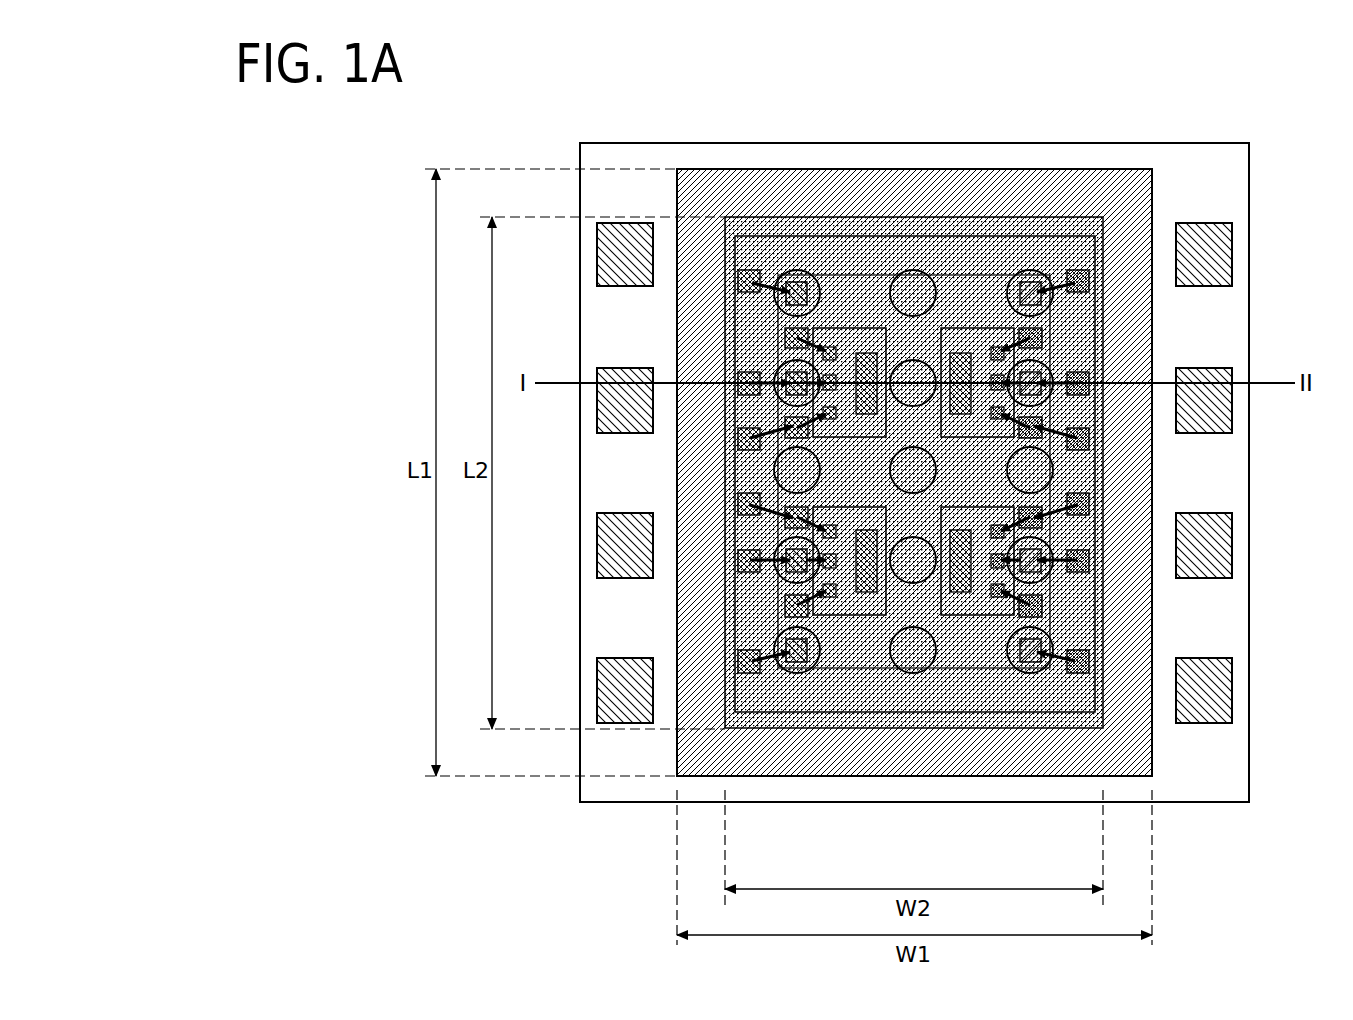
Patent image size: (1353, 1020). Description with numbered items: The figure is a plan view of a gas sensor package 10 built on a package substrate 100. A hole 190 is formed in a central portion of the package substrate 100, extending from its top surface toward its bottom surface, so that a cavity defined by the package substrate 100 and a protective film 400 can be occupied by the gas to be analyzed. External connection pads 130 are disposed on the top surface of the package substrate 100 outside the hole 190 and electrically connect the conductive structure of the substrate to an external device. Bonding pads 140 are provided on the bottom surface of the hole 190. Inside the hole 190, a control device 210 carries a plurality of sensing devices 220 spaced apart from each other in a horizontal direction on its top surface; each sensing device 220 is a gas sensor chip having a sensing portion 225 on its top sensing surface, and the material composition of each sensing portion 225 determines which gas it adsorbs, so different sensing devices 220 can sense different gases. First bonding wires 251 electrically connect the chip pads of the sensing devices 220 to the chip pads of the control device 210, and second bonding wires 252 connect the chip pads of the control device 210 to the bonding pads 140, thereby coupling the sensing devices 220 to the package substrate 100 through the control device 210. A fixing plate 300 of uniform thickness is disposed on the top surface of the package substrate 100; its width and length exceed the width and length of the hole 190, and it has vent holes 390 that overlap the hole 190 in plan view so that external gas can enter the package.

The gas sensor package 10 is at (1202, 80).
The package substrate 100 is at (1249, 180).
The external connection pad 130 is at (1215, 253).
The bonding pads 140 is at (1085, 290).
The hole 190 is at (730, 250).
The control device 210 is at (978, 668).
The sensing device 220 is at (855, 615).
The sensing portion 225 is at (960, 350).
The first bonding wires 251 is at (1027, 398).
The second bonding wires 252 is at (1058, 418).
The fixing plate 300 is at (1152, 485).
The vent hole 390 is at (895, 292).
The protective film 400 is at (1100, 605).